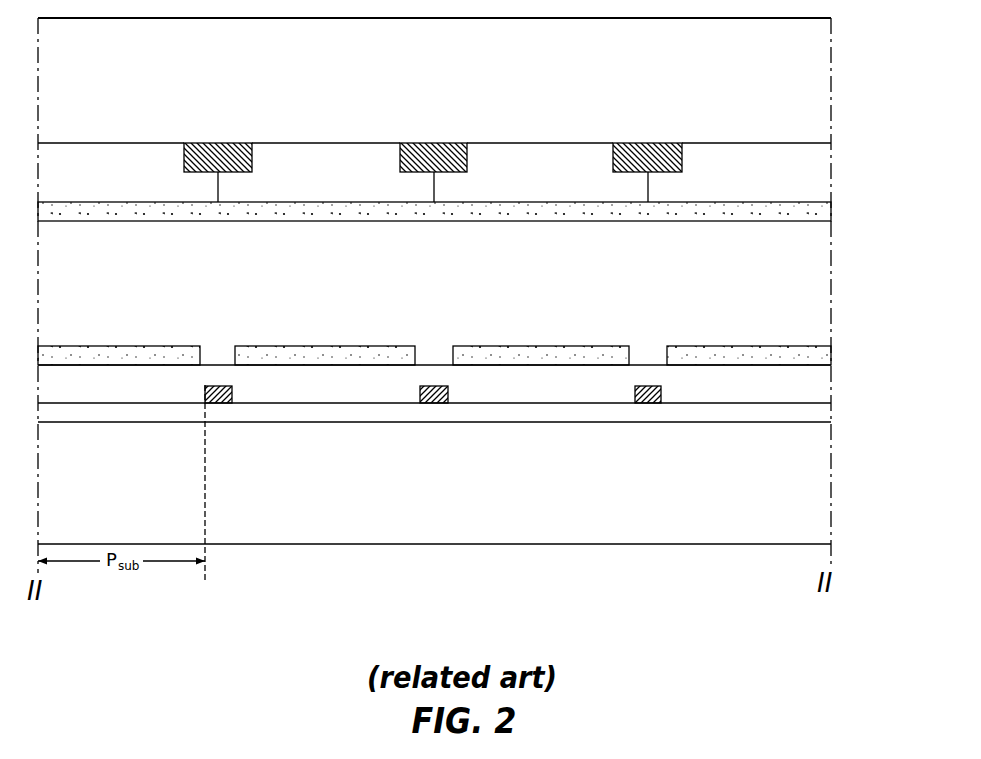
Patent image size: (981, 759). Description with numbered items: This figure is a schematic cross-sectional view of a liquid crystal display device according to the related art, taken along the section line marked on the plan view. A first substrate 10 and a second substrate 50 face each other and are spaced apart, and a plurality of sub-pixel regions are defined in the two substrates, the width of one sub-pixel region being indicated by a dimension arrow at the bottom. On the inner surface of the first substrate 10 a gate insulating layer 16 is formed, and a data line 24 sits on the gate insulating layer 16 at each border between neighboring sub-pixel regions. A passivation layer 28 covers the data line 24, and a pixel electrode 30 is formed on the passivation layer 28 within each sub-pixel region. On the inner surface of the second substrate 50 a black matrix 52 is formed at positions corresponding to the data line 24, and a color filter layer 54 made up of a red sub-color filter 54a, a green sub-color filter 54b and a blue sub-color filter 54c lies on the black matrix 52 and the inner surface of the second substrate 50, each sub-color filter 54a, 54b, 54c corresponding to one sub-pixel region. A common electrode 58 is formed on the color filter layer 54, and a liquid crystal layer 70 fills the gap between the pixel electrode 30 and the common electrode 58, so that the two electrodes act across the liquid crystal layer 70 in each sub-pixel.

The first substrate 10 is at (813, 492).
The gate insulating layer 16 is at (813, 412).
The data line 24 is at (213, 392).
The passivation layer 28 is at (813, 382).
The pixel electrode 30 is at (138, 358).
The second substrate 50 is at (813, 87).
The black matrix 52 is at (218, 143).
The color filter layer 54 is at (434, 92).
The red sub-color filter 54a is at (107, 160).
The green sub-color filter 54b is at (323, 160).
The blue sub-color filter 54c is at (533, 160).
The common electrode 58 is at (442, 222).
The liquid crystal layer 70 is at (813, 280).